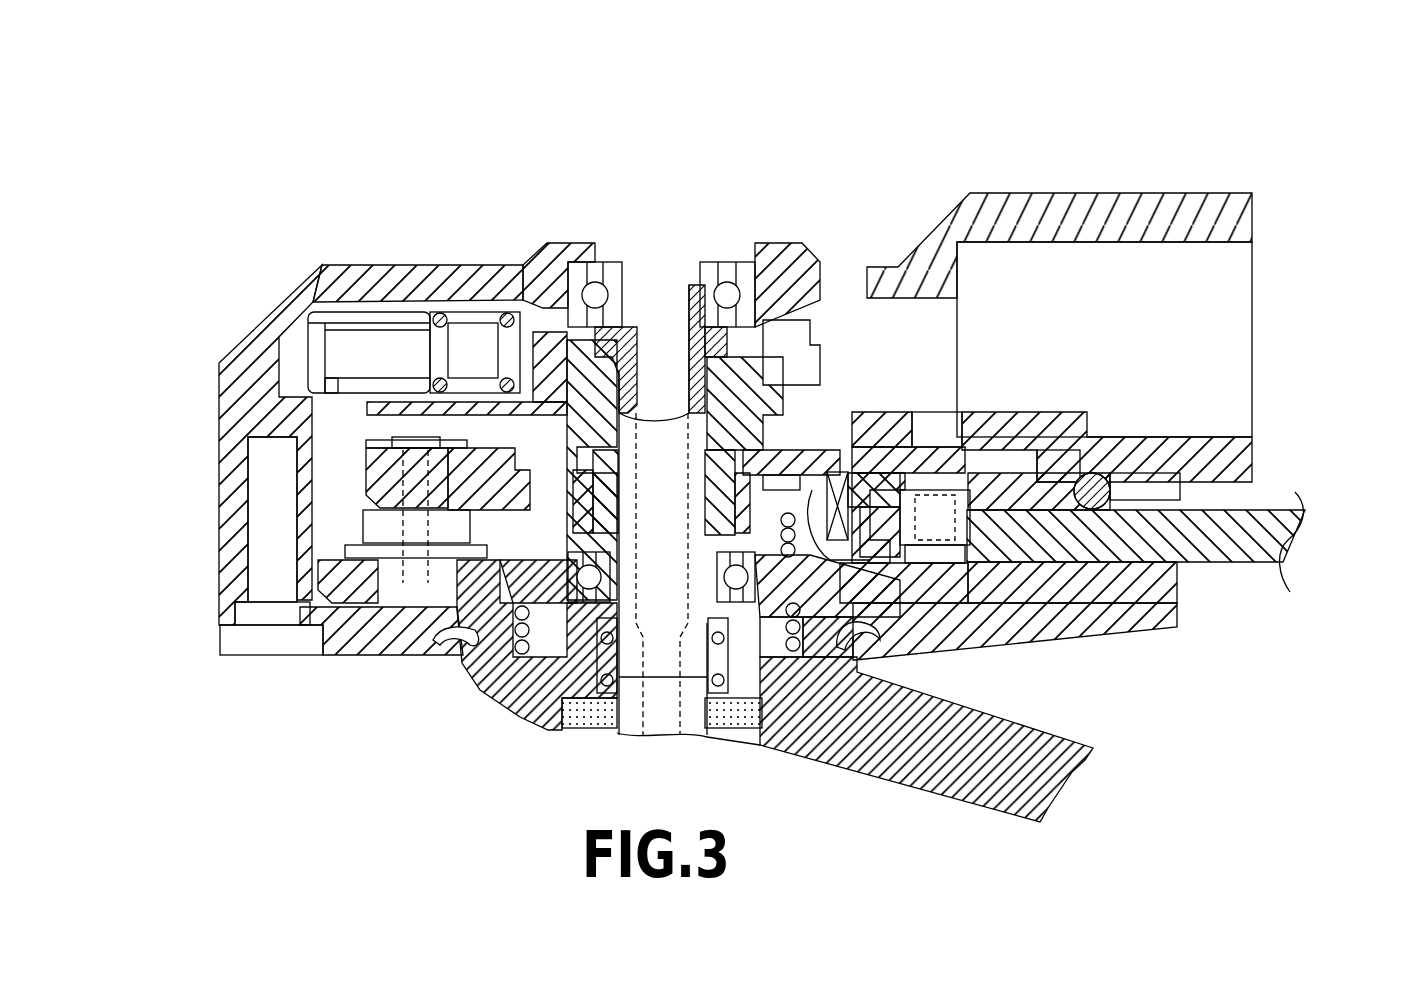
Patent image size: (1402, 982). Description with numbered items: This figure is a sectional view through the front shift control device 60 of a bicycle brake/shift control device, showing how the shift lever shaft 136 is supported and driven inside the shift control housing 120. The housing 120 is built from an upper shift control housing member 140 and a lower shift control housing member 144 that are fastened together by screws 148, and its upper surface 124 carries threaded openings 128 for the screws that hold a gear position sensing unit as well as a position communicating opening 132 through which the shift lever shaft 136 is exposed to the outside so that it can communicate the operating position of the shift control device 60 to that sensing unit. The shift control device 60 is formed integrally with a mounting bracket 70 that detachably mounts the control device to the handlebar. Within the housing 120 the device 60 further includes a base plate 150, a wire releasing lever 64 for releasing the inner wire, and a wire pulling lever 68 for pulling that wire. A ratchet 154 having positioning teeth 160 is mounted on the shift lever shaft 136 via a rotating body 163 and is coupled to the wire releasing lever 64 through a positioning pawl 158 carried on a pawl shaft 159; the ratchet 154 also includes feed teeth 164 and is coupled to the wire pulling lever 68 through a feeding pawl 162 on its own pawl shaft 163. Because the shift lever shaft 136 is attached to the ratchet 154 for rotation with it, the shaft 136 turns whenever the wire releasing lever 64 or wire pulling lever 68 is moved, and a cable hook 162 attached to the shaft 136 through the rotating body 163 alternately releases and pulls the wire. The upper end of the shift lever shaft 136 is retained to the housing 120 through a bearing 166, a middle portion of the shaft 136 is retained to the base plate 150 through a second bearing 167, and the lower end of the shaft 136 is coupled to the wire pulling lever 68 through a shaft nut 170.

The front shift control device 60 is at (537, 190).
The wire releasing lever 64 is at (1282, 533).
The wire pulling lever 68 is at (917, 765).
The mounting bracket 70 is at (985, 193).
The shift control housing 120 is at (205, 372).
The upper surface 124 is at (505, 265).
The threaded openings 128 is at (843, 283).
The position communicating opening 132 is at (725, 262).
The shift lever shaft 136 is at (642, 712).
The upper shift control housing member 140 is at (300, 295).
The lower shift control housing member 144 is at (220, 537).
The screws 148 is at (228, 637).
The base plate 150 is at (1180, 590).
The ratchet 154 is at (855, 565).
The positioning pawl 158 is at (995, 447).
The pawl shaft 159 is at (925, 412).
The positioning teeth 160 is at (805, 470).
The feeding pawl 162 is at (312, 322).
The rotating body 163 is at (517, 358).
The feed teeth 164 is at (420, 560).
The bearing 166 is at (600, 262).
The bearing 167 is at (460, 670).
The shaft nut 170 is at (580, 730).